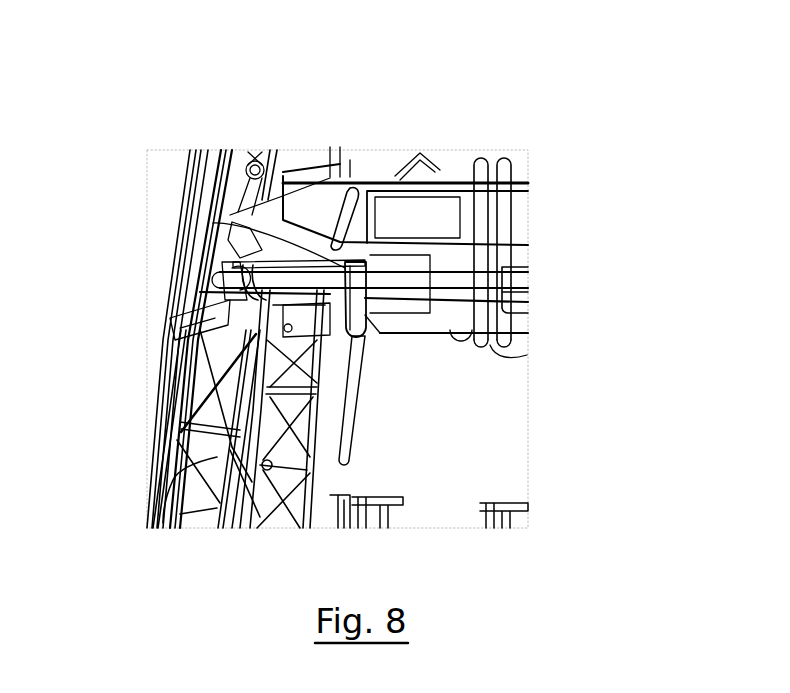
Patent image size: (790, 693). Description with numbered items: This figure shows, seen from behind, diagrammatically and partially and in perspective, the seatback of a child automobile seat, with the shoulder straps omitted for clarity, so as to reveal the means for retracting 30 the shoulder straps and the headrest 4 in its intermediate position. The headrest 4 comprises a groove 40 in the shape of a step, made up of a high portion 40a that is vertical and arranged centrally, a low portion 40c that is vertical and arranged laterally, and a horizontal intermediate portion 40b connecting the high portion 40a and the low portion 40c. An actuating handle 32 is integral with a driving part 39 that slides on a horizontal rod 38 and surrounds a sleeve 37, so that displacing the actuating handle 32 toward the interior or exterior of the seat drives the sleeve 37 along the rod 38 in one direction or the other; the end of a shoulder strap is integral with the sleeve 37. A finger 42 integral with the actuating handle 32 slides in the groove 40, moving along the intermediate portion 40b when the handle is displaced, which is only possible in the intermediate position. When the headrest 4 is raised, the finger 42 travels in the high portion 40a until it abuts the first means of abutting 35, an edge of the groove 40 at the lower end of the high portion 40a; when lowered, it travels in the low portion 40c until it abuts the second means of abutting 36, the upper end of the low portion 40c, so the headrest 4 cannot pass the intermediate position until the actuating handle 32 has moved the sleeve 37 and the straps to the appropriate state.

The headrest 4 is at (457, 455).
The means for retracting 30 is at (406, 275).
The actuating handle 32 is at (326, 170).
The first means of abutting 35 is at (462, 333).
The second means of abutting 36 is at (378, 335).
The sleeve 37 is at (245, 322).
The horizontal rod 38 is at (527, 278).
The driving part 39 is at (232, 226).
The groove 40 is at (527, 355).
The high portion 40a is at (432, 205).
The intermediate portion 40b is at (398, 333).
The low portion 40c is at (357, 528).
The finger 42 is at (370, 332).